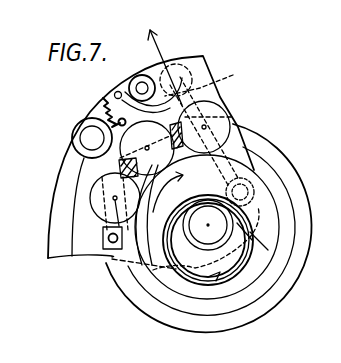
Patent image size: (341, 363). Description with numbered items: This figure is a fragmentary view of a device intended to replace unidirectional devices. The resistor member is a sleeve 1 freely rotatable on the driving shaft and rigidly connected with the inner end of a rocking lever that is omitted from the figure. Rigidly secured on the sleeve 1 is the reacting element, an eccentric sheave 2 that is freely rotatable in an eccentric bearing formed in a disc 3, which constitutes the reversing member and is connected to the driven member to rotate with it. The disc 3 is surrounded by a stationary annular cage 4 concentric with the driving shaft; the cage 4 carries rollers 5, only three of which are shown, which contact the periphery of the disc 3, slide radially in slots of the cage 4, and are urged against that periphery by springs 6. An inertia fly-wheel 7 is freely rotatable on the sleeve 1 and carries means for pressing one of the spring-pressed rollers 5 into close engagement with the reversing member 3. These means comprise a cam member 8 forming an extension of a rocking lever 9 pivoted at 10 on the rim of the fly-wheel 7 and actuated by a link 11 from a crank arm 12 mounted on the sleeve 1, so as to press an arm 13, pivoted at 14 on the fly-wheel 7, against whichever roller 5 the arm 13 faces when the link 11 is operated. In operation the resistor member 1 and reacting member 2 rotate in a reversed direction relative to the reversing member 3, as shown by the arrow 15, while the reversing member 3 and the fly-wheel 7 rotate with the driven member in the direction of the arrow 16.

The sleeve 1 is at (196, 237).
The eccentric sheave 2 is at (226, 262).
The disc 3 is at (263, 193).
The annular cage 4 is at (273, 148).
The rollers 5 is at (218, 113).
The springs 6 is at (108, 208).
The inertia fly-wheel 7 is at (44, 197).
The cam member 8 is at (127, 96).
The rocking lever 9 is at (156, 76).
The pivot 10 is at (138, 76).
The link 11 is at (209, 78).
The crank arm 12 is at (242, 230).
The arm 13 is at (180, 73).
The pivot 14 is at (93, 139).
The arrow 15 is at (223, 282).
The arrow 16 is at (159, 197).